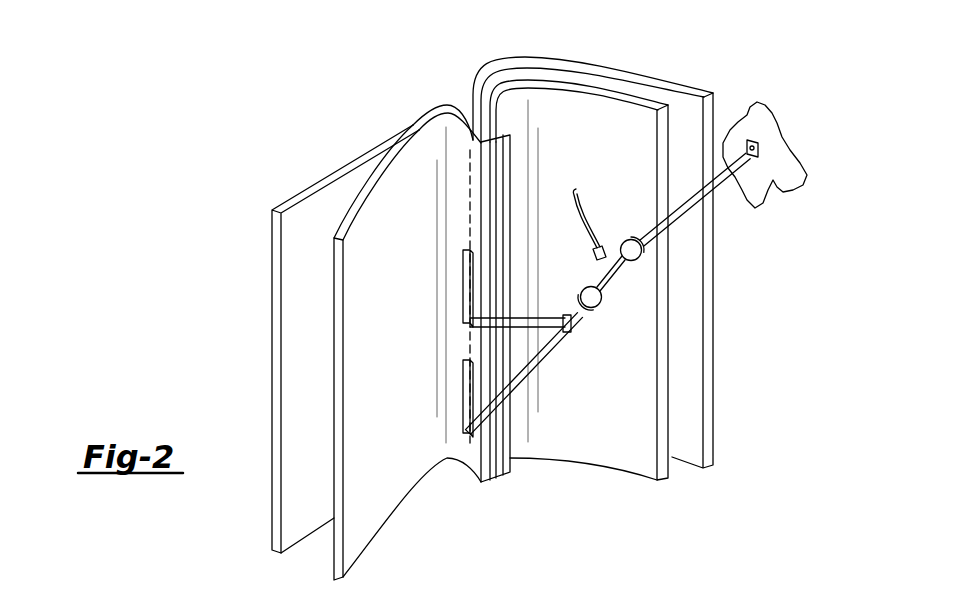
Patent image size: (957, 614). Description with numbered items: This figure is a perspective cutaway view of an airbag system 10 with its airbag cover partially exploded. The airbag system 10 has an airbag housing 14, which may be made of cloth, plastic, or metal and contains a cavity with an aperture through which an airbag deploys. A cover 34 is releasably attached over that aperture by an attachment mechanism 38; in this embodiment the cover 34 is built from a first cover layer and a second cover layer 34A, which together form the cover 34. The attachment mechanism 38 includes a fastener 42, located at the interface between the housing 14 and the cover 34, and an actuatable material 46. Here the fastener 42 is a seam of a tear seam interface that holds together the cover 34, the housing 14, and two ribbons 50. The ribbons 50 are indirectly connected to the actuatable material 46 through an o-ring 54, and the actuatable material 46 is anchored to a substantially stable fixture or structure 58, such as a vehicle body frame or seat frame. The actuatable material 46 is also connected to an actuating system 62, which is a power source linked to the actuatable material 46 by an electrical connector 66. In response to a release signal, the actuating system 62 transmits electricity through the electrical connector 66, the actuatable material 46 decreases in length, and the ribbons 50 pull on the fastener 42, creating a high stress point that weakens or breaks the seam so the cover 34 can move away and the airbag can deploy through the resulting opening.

The airbag system 10 is at (446, 85).
The airbag housing 14 is at (594, 62).
The cover 34 is at (273, 251).
The second cover layer 34A is at (334, 312).
The attachment mechanism 38 is at (614, 314).
The fastener 42 is at (470, 335).
The actuatable material 46 is at (613, 272).
The ribbons 50 is at (537, 357).
The o-ring 54 is at (625, 235).
The fixture or structure 58 is at (773, 181).
The actuating system 62 is at (602, 232).
The electrical connector 66 is at (575, 218).